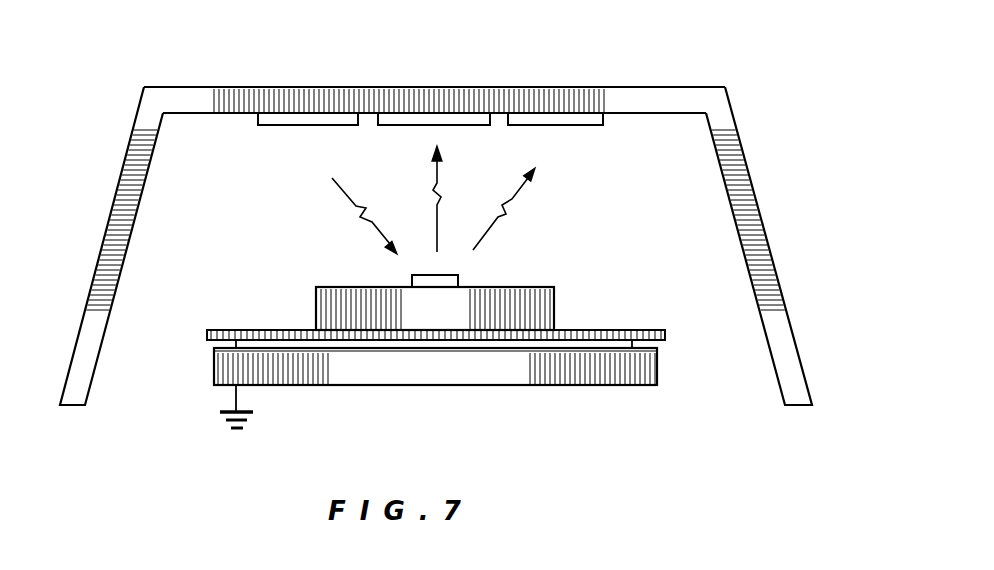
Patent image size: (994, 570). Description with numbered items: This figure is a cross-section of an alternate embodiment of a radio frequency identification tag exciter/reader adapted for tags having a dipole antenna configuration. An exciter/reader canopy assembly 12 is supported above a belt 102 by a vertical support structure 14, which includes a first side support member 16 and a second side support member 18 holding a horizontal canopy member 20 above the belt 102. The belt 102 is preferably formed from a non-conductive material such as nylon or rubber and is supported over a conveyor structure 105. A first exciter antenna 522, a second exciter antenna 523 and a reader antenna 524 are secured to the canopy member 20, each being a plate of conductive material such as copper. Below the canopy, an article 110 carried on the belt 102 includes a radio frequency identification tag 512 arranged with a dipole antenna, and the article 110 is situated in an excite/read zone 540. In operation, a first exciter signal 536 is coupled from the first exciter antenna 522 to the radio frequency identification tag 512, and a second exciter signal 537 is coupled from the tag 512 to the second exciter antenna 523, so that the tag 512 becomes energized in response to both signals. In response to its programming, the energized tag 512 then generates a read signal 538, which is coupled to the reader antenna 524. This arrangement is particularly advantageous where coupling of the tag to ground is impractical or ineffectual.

The exciter/reader canopy assembly 12 is at (667, 73).
The vertical support structure 14 is at (801, 276).
The first side support member 16 is at (751, 199).
The second side support member 18 is at (121, 222).
The horizontal canopy member 20 is at (449, 93).
The belt 102 is at (270, 331).
The conveyor structure 105 is at (640, 372).
The article 110 is at (540, 309).
The radio frequency identification tag 512 is at (456, 276).
The first exciter antenna 522 is at (296, 126).
The second exciter antenna 523 is at (582, 126).
The reader antenna 524 is at (413, 128).
The first exciter signal 536 is at (345, 207).
The second exciter signal 537 is at (517, 203).
The read signal 538 is at (436, 180).
The excite/read zone 540 is at (528, 165).